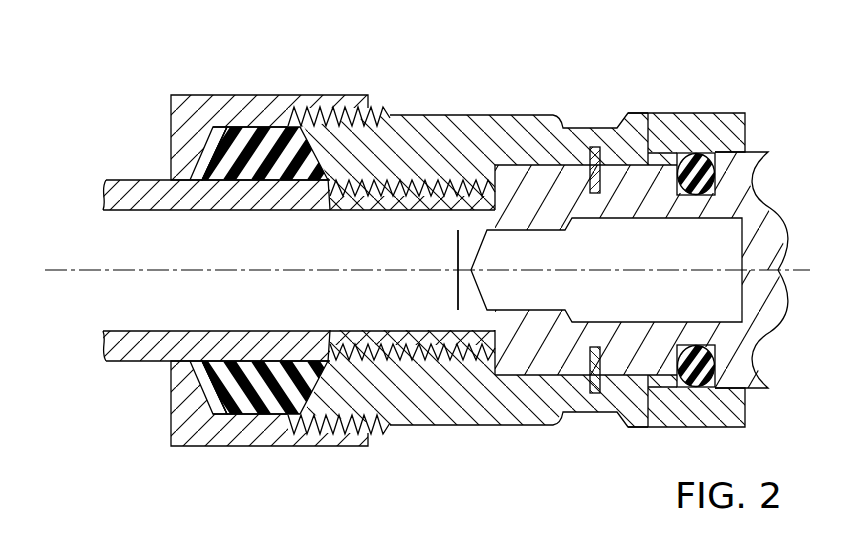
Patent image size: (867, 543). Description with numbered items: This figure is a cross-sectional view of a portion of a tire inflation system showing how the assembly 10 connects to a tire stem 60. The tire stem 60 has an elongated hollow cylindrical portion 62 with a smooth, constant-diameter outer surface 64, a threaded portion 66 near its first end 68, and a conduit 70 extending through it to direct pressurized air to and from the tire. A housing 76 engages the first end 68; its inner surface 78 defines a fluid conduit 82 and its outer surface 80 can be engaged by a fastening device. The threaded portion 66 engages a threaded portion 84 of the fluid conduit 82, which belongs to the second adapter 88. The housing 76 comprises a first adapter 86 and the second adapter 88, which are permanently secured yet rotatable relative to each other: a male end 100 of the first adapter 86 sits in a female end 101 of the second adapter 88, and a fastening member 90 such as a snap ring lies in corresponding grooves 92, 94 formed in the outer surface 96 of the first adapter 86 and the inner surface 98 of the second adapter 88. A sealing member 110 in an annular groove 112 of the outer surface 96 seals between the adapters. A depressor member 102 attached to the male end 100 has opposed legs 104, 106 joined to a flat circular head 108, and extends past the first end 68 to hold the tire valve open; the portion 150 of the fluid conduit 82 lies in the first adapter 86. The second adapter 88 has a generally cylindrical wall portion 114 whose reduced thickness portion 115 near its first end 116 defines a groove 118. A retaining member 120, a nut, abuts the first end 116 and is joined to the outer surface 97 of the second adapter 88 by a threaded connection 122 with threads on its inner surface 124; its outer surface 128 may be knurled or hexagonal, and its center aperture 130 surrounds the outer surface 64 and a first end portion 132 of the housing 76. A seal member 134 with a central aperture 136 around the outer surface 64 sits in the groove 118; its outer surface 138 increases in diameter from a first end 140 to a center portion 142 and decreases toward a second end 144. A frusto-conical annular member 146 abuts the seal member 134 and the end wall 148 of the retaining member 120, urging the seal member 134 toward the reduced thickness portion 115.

The assembly 10 is at (66, 35).
The tire stem 60 is at (103, 361).
The elongated hollow cylindrical portion 62 is at (130, 350).
The outer surface 64 is at (110, 180).
The threaded portion 66 is at (420, 352).
The first end 68 is at (497, 357).
The conduit 70 is at (167, 252).
The housing 76 is at (670, 142).
The inner surface 78 is at (747, 220).
The outer surface 80 is at (440, 180).
The fluid conduit 82 is at (699, 252).
The threaded portion 84 is at (407, 352).
The first adapter 86 is at (742, 343).
The second adapter 88 is at (443, 426).
The fastening member 90 is at (593, 145).
The groove 92 is at (601, 160).
The groove 94 is at (594, 190).
The outer surface 96 is at (640, 130).
The outer surface 97 is at (395, 115).
The inner surface 98 is at (513, 165).
The male end 100 is at (495, 333).
The female end 101 is at (747, 408).
The depressor member 102 is at (462, 228).
The leg 104 is at (470, 236).
The leg 106 is at (470, 312).
The flat circular head 108 is at (458, 272).
The sealing member 110 is at (700, 112).
The annular groove 112 is at (720, 200).
The wall portion 114 is at (607, 405).
The reduced thickness portion 115 is at (370, 117).
The first end 116 is at (288, 110).
The groove 118 is at (386, 130).
The retaining member 120 is at (182, 408).
The threaded connection 122 is at (300, 420).
The inner surface 124 is at (240, 418).
The outer surface 128 is at (183, 447).
The center aperture 130 is at (175, 181).
The first end portion 132 is at (333, 400).
The seal member 134 is at (258, 138).
The central aperture 136 is at (183, 177).
The outer surface 138 is at (242, 130).
The first end 140 is at (183, 160).
The center portion 142 is at (255, 160).
The second end 144 is at (325, 160).
The annular member 146 is at (193, 168).
The end wall 148 is at (173, 165).
The portion of the fluid conduit 150 is at (590, 263).